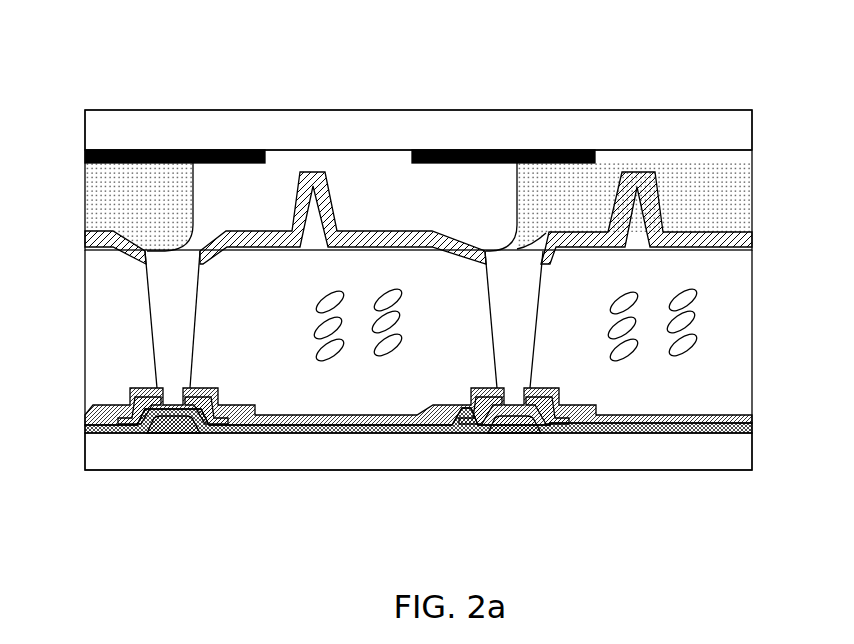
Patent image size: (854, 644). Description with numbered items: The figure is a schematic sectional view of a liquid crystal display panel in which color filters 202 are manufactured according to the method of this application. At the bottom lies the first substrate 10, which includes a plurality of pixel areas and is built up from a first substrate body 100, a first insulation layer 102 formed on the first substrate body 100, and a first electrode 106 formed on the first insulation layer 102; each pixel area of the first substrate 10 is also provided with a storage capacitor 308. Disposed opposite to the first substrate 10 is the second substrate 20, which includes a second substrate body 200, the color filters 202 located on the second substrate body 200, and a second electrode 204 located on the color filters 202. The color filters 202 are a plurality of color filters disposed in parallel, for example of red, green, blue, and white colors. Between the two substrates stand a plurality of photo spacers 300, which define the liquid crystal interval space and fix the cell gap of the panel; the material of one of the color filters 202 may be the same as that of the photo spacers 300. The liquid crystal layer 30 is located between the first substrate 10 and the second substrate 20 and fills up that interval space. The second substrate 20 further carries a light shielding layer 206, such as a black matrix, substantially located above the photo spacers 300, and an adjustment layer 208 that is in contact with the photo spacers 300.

The second substrate 20 is at (749, 96).
The second substrate body 200 is at (593, 118).
The light shielding layer 206 is at (503, 157).
The color filters 202 is at (737, 183).
The second electrode 204 is at (755, 238).
The adjustment layer 208 is at (260, 213).
The photo spacer 300 is at (162, 322).
The liquid crystal layer 30 is at (693, 322).
The storage capacitor 308 is at (163, 437).
The first electrode 106 is at (752, 417).
The first insulation layer 102 is at (752, 430).
The first substrate body 100 is at (742, 462).
The first substrate 10 is at (720, 498).